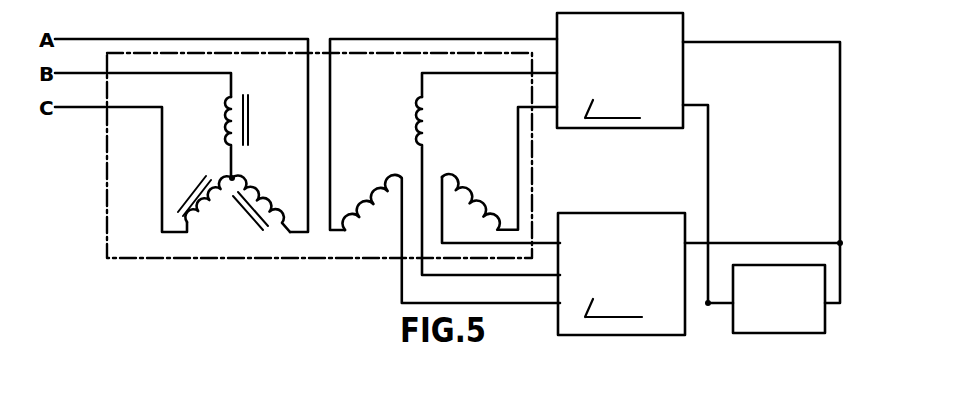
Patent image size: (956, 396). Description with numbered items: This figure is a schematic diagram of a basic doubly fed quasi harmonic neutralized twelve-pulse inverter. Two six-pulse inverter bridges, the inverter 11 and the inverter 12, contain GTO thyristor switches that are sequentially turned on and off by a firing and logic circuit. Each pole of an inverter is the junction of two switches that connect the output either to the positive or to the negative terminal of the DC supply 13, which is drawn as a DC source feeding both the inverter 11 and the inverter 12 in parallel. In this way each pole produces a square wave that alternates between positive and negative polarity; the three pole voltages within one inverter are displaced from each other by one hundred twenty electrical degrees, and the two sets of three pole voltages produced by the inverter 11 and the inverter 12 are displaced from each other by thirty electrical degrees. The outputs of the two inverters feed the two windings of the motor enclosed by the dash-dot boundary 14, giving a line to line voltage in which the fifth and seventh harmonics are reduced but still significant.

The inverter 11 is at (602, 130).
The inverter 12 is at (613, 212).
The DC supply 13 is at (753, 334).
The motor with dual windings 14 is at (322, 50).